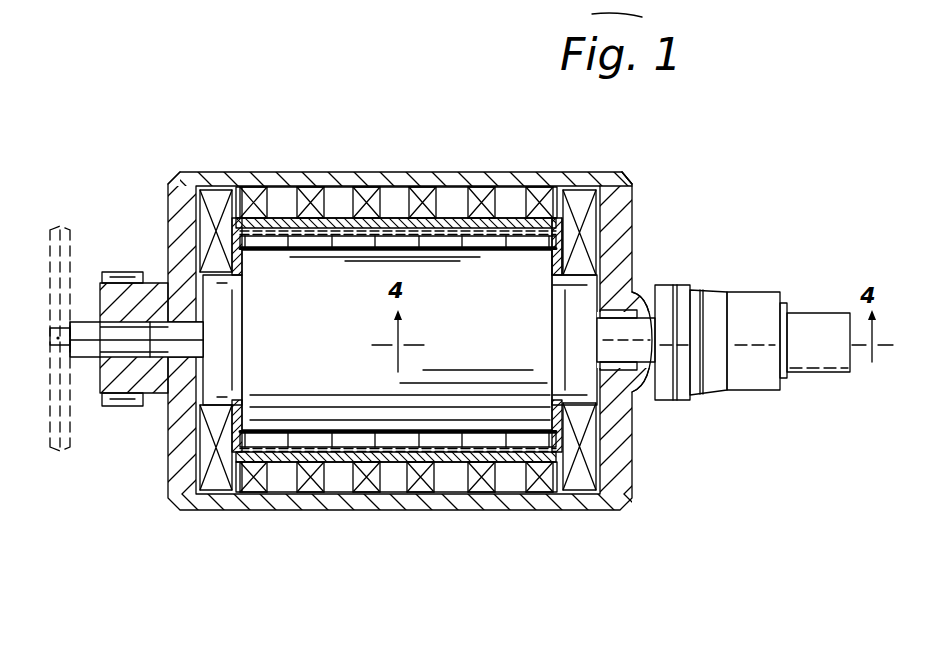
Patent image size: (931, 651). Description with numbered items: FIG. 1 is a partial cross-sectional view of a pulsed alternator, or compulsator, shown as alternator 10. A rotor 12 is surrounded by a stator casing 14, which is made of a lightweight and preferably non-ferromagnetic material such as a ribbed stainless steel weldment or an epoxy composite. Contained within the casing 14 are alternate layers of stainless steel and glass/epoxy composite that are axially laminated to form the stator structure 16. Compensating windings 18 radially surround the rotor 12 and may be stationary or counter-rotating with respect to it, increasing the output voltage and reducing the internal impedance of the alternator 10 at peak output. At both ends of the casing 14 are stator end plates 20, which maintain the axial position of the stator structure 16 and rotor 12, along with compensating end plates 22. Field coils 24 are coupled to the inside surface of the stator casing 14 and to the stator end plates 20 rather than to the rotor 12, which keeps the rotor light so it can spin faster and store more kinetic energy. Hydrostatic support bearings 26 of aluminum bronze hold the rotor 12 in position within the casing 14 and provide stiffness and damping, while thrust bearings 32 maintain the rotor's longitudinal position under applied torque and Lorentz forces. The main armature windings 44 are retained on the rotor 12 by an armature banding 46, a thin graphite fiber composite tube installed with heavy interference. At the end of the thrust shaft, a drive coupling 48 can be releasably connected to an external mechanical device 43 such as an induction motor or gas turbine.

The alternator 10 is at (176, 163).
The rotor 12 is at (322, 360).
The stator casing 14 is at (458, 172).
The stator structure 16 is at (285, 211).
The compensating windings 18 is at (390, 244).
The stator end plates 20 is at (603, 222).
The compensating end plates 22 is at (560, 248).
The field coils 24 is at (598, 232).
The hydrostatic support bearings 26 is at (205, 336).
The thrust bearings 32 is at (108, 312).
The mechanical device 43 is at (78, 225).
The main armature windings 44 is at (345, 236).
The armature banding 46 is at (392, 463).
The drive coupling 48 is at (60, 358).